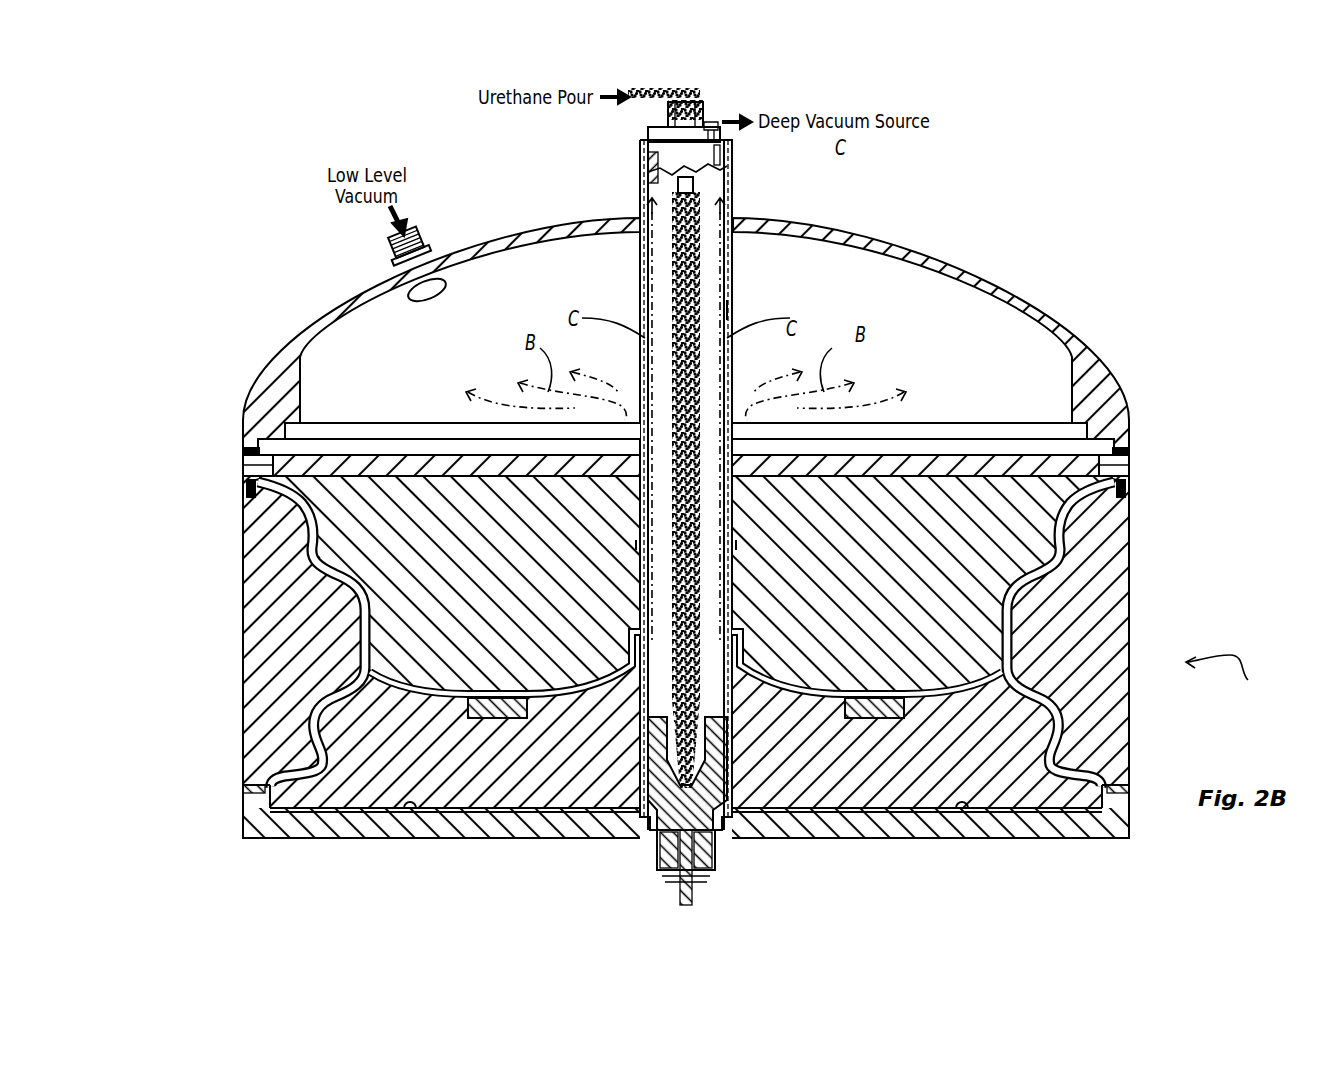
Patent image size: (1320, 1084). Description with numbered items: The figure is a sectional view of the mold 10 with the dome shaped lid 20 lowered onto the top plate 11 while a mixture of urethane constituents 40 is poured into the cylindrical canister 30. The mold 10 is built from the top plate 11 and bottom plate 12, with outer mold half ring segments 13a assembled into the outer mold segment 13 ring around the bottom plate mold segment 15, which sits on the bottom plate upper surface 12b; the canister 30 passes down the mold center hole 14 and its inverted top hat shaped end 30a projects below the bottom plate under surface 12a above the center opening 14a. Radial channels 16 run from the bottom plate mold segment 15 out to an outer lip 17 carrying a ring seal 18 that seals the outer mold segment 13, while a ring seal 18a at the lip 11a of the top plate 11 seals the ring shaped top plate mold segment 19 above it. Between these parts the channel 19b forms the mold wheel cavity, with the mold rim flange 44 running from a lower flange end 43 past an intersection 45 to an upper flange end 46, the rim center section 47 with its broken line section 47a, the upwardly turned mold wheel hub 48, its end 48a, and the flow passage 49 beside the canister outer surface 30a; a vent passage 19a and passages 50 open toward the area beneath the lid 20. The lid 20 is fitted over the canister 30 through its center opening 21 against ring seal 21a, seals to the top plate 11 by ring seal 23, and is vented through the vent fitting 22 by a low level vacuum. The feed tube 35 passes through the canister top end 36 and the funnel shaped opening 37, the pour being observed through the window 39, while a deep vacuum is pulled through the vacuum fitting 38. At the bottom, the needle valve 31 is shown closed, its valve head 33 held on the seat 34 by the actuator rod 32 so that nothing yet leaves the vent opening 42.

The mold 10 is at (1231, 675).
The top plate 11 is at (1095, 440).
The lip of the top plate 11a is at (248, 470).
The bottom plate 12 is at (968, 840).
The bottom plate under surface 12a is at (265, 840).
The bottom plate upper surface 12b is at (425, 812).
The outer mold segment 13 is at (302, 641).
The outer mold half ring segment 13a is at (345, 665).
The mold center hole 14 is at (638, 445).
The center opening 14a is at (645, 840).
The bottom plate mold segment 15 is at (494, 780).
The radial channels 16 is at (350, 815).
The outer lip 17 is at (255, 802).
The ring seal 18 is at (252, 792).
The ring seal 18a is at (258, 495).
The top plate mold segment 19 is at (494, 579).
The vent passage 19a is at (300, 530).
The channel 19b is at (326, 619).
The dome shaped lid 20 is at (955, 250).
The center opening of the dome shaped lid 21 is at (745, 222).
The ring seal 21a is at (632, 234).
The vent fitting 22 is at (395, 252).
The ring seal 23 is at (248, 432).
The cylindrical canister 30 is at (750, 211).
The inverted top hat shaped end 30a is at (738, 312).
The needle valve 31 is at (647, 858).
The actuator rod 32 is at (683, 900).
The valve head 33 is at (707, 850).
The needle valve seat 34 is at (660, 752).
The feed tube or pipe 35 is at (700, 112).
The top end of the cylindrical canister 36 is at (648, 133).
The funnel shaped opening 37 is at (662, 120).
The vacuum fitting 38 is at (720, 138).
The window 39 is at (715, 124).
The mixture of urethane constituents 40 is at (548, 108).
The vent opening 42 is at (660, 800).
The lower flange end 43 is at (258, 785).
The mold rim flange 44 is at (336, 641).
The intersection 45 is at (330, 690).
The upper flange end 46 is at (252, 485).
The rim center section 47 is at (490, 698).
The section of the rim center section 47a is at (385, 690).
The mold wheel hub 48 is at (632, 628).
The end of the mold wheel hub 48a is at (632, 605).
The flow passage 49 is at (636, 545).
The passages 50 is at (255, 462).